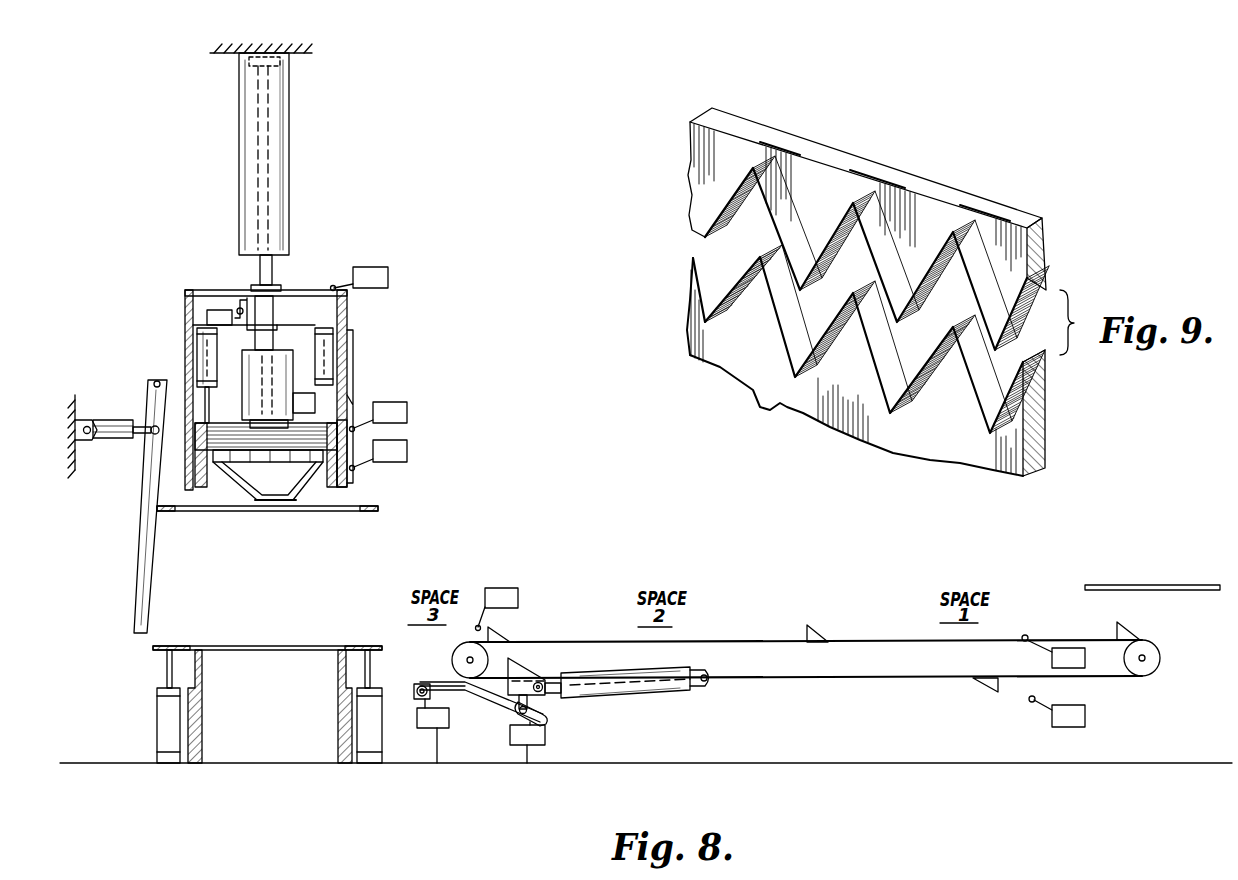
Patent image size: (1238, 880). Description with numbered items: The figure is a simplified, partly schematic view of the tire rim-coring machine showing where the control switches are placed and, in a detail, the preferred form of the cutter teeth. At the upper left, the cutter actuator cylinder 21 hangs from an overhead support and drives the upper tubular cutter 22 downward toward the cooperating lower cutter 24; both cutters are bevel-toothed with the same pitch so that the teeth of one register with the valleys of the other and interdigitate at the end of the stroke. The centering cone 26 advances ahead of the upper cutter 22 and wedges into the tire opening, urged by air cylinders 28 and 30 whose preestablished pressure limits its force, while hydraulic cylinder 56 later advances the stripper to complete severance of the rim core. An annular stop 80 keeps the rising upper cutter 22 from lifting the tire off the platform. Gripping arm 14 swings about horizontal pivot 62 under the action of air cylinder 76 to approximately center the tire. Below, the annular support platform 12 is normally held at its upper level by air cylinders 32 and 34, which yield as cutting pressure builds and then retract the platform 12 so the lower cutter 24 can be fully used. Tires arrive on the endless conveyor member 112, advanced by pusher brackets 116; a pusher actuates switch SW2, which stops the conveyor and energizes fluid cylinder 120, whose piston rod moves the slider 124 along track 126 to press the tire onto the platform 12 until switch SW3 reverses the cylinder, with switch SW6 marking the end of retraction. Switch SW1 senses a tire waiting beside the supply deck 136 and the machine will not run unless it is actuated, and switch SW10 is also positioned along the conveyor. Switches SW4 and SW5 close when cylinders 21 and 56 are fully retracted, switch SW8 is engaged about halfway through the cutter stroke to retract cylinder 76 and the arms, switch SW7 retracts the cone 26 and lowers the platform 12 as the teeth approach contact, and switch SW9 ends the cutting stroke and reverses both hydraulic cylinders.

In FIG. 8, the annular support platform 12 is at (292, 672).
In FIG. 8, the gripping arm 14 is at (122, 586).
In FIG. 8, the cutter actuator cylinder 21 is at (284, 172).
In FIG. 8, the upper tubular cutter 22 is at (372, 459).
In FIG. 9, the upper tubular cutter 22 is at (809, 229).
In FIG. 8, the lower cutter 24 is at (267, 629).
In FIG. 9, the lower cutter 24 is at (807, 360).
In FIG. 8, the centering cone 26 is at (266, 484).
In FIG. 8, the air cylinder 28 is at (378, 401).
In FIG. 8, the air cylinder 30 is at (172, 356).
In FIG. 8, the air cylinder 32 is at (137, 706).
In FIG. 8, the air cylinder 34 is at (384, 706).
In FIG. 8, the hydraulic cylinder 56 is at (277, 362).
In FIG. 8, the horizontal pivot 62 is at (141, 480).
In FIG. 8, the air cylinder 76 is at (113, 429).
In FIG. 8, the annular stop 80 is at (283, 529).
In FIG. 8, the endless conveyor member 112 is at (806, 634).
In FIG. 8, the pusher bracket 116 is at (743, 650).
In FIG. 8, the fluid cylinder 120 is at (635, 700).
In FIG. 8, the slider 124 is at (546, 654).
In FIG. 8, the track 126 is at (480, 680).
In FIG. 8, the supply deck 136 is at (1152, 566).
In FIG. 8, the switch SW1 is at (1058, 634).
In FIG. 8, the switch SW2 is at (528, 604).
In FIG. 8, the switch SW3 is at (435, 750).
In FIG. 8, the switch SW4 is at (388, 278).
In FIG. 8, the switch SW5 is at (357, 384).
In FIG. 8, the switch SW6 is at (565, 742).
In FIG. 8, the switch SW7 is at (415, 451).
In FIG. 8, the switch SW8 is at (412, 404).
In FIG. 8, the switch SW9 is at (189, 282).
In FIG. 8, the switch SW10 is at (1086, 723).